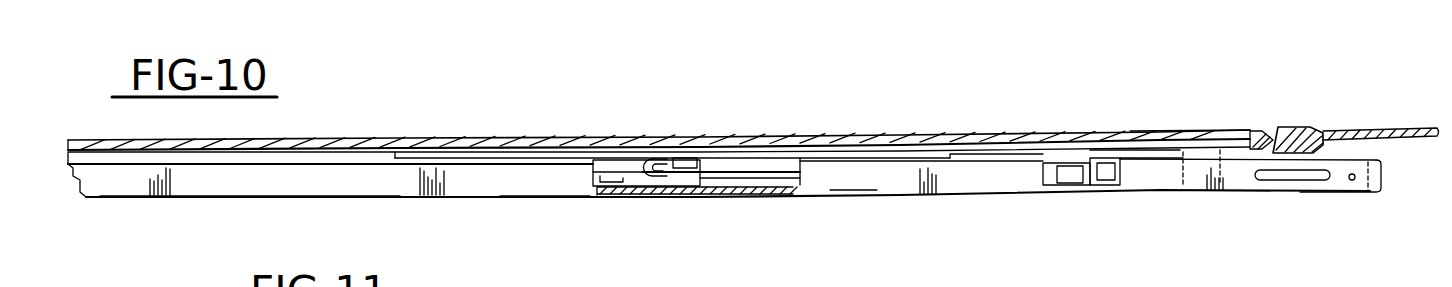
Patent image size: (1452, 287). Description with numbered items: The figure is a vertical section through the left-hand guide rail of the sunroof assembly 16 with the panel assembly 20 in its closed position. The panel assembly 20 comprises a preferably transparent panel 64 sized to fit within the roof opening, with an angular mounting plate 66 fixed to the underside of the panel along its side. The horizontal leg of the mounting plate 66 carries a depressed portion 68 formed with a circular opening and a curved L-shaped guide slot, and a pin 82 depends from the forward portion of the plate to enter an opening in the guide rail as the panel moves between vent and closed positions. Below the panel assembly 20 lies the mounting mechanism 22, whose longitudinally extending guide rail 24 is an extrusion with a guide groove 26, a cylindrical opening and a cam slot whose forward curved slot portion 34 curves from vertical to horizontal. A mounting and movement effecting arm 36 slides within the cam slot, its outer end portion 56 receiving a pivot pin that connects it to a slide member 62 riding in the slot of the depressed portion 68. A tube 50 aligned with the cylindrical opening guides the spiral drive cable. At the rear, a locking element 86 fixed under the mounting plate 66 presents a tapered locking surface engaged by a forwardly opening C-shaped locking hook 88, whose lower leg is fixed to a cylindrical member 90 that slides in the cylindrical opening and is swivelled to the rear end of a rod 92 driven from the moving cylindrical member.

The sunroof assembly 16 is at (1175, 134).
The panel assembly 20 is at (828, 135).
The mounting mechanism 22 is at (907, 197).
The guide rail 24 is at (520, 186).
The guide groove 26 is at (795, 160).
The curved slot portion 34 is at (1040, 183).
The mounting and movement effecting arm 36 is at (1108, 190).
The tube 50 is at (1298, 180).
The outer end portion 56 is at (1122, 168).
The slide member 62 is at (1097, 150).
The panel 64 is at (507, 140).
The angular mounting plate 66 is at (577, 160).
The depressed portion 68 is at (986, 150).
The pin 82 is at (1190, 167).
The locking element 86 is at (720, 181).
The C-shaped locking hook 88 is at (633, 158).
The cylindrical member 90 is at (680, 182).
The rod 92 is at (785, 182).